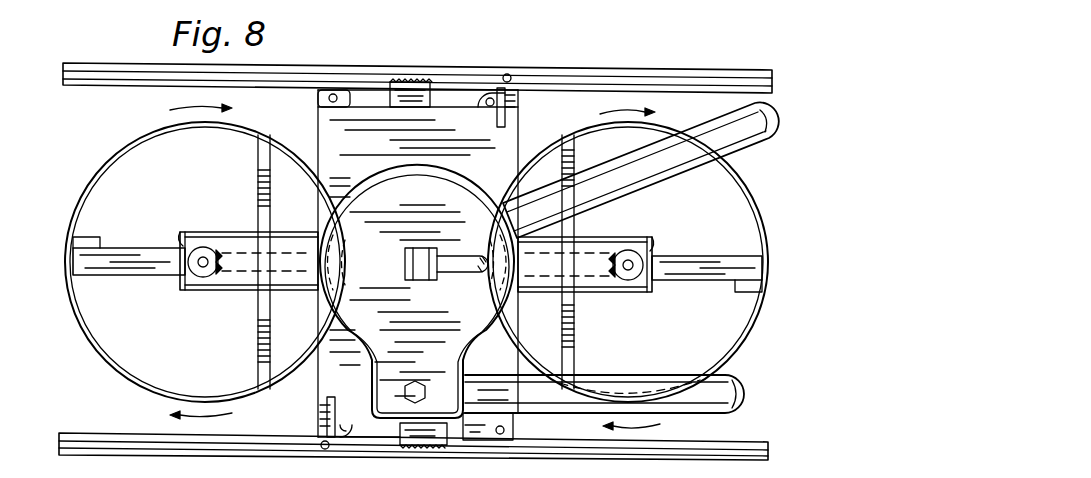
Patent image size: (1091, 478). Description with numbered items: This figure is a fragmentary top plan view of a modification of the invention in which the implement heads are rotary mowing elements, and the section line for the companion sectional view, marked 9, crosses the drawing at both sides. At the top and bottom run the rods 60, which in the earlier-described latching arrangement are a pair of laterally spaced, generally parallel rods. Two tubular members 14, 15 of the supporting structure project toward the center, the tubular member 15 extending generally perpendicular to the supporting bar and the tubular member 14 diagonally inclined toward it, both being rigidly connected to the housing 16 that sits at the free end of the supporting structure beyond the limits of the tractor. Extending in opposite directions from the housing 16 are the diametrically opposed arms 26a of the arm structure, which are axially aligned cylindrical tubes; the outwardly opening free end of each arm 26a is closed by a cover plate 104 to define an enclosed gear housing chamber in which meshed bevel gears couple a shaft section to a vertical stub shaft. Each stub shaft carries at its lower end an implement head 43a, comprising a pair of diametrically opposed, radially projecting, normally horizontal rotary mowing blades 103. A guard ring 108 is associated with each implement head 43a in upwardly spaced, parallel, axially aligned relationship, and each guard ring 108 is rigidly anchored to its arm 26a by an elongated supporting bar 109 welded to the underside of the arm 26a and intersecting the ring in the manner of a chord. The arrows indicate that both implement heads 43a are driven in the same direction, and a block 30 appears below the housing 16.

The rod 60 is at (618, 78).
The guard ring 108 is at (125, 148).
The supporting bar 109 is at (258, 178).
The housing 16 is at (432, 200).
The mounting block 30 is at (447, 477).
The tubular member 14 is at (699, 132).
The tubular member 15 is at (693, 403).
The rotary mowing blade 103 is at (134, 257).
The arm 26a is at (233, 286).
The cover plate 104 is at (182, 236).
The implement head 43a is at (141, 280).
The section line 9 is at (33, 268).